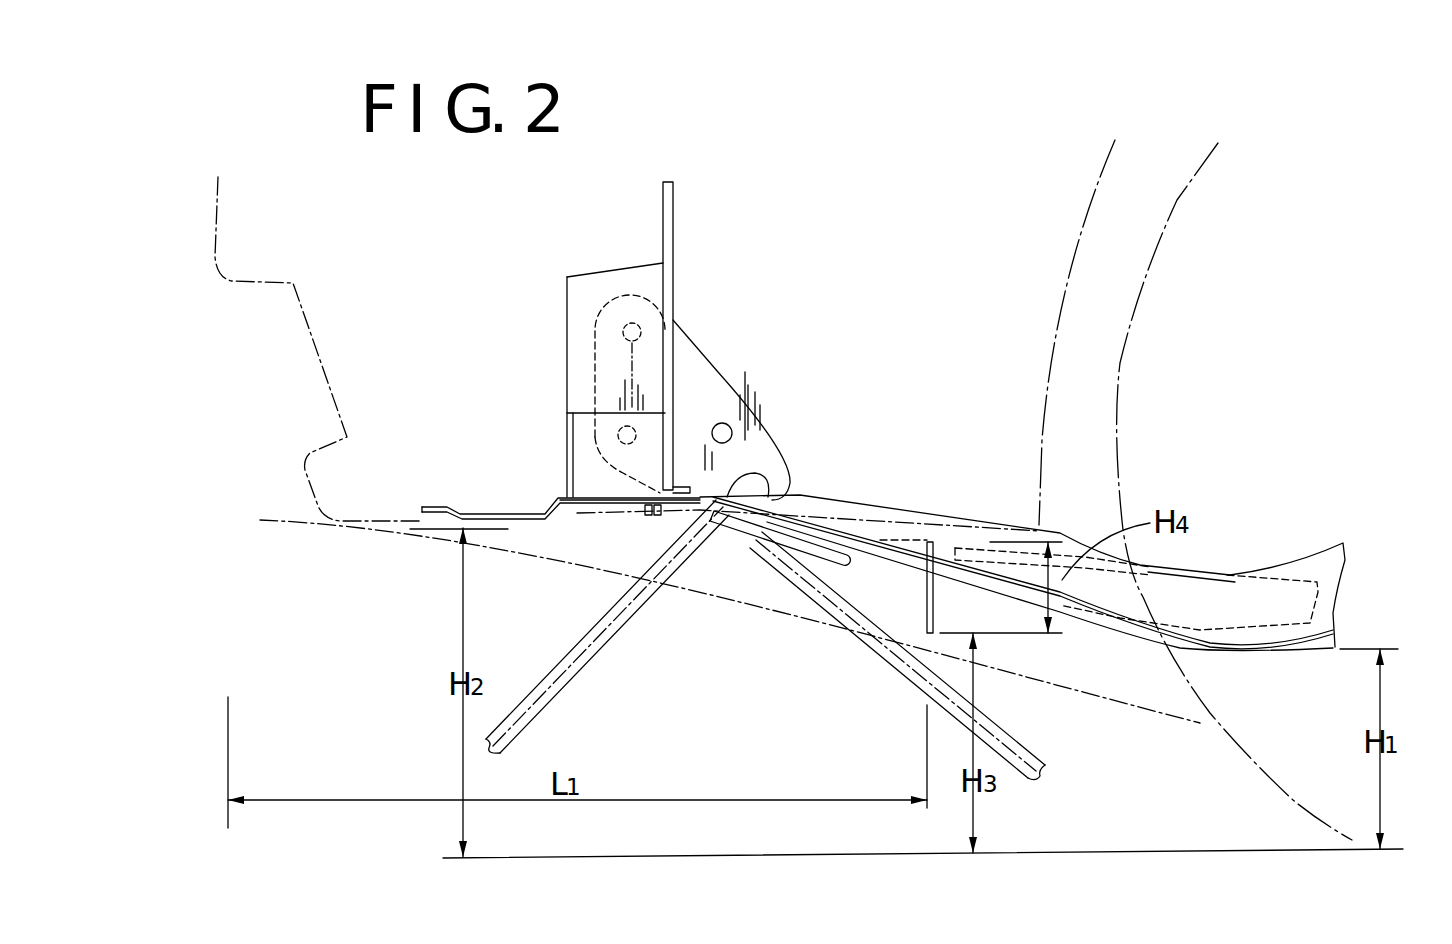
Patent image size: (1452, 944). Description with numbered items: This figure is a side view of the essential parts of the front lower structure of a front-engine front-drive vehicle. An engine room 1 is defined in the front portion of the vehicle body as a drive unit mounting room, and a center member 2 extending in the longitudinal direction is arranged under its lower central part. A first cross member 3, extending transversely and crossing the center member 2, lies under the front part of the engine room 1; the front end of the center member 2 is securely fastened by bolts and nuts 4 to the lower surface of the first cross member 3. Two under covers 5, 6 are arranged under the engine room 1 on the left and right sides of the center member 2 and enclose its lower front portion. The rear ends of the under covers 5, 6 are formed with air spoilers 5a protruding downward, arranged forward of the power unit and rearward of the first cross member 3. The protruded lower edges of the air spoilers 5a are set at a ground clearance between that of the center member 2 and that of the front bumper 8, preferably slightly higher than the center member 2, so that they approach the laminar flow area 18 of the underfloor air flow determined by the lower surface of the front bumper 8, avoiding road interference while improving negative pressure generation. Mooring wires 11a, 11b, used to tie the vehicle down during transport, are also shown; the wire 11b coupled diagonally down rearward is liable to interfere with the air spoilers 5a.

The engine room 1 is at (908, 312).
The center member 2 is at (943, 513).
The first cross member 3 is at (567, 345).
The bolts and nuts 4 is at (657, 516).
The under cover 5 is at (771, 548).
The under cover 6 is at (886, 546).
The air spoiler 5a is at (925, 603).
The front bumper 8 is at (325, 370).
The mooring wire 11a is at (597, 660).
The mooring wire 11b is at (993, 732).
The laminar flow area 18 is at (393, 538).